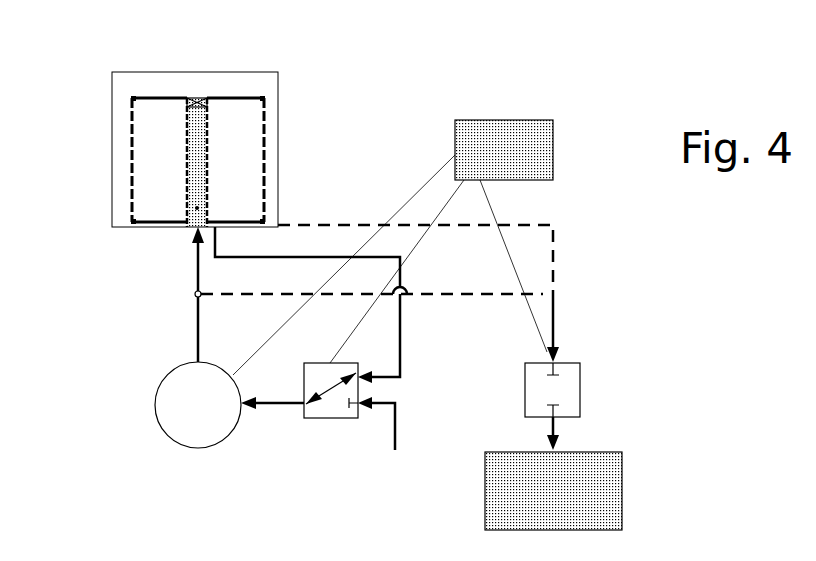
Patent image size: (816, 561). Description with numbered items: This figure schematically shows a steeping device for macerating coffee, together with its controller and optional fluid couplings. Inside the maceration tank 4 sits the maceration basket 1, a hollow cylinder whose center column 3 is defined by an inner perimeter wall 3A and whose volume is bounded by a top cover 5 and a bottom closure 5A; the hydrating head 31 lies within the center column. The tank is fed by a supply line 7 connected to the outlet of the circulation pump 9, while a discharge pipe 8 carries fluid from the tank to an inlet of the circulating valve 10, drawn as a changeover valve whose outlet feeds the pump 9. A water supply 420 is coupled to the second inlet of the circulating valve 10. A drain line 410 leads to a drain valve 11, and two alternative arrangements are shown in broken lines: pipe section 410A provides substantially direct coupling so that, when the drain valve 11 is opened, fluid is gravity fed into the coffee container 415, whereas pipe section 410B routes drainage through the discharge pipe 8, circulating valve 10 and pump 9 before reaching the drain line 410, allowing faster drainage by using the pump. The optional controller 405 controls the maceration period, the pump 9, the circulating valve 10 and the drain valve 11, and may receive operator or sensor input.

The maceration basket 1 is at (132, 128).
The center column 3 is at (199, 97).
The inner perimeter wall 3A is at (188, 173).
The hydrating head 31 is at (196, 208).
The maceration tank 4 is at (112, 85).
The top cover 5 is at (157, 98).
The bottom closure 5A is at (165, 220).
The supply line 7 is at (193, 260).
The discharge pipe 8 is at (303, 256).
The circulation pump 9 is at (160, 413).
The circulating valve 10 is at (300, 412).
The drain valve 11 is at (583, 367).
The controller 405 is at (393, 247).
The drain line 410 is at (556, 322).
The pipe section 410A is at (556, 232).
The pipe section 410B is at (471, 297).
The coffee container 415 is at (607, 447).
The water supply 420 is at (392, 455).